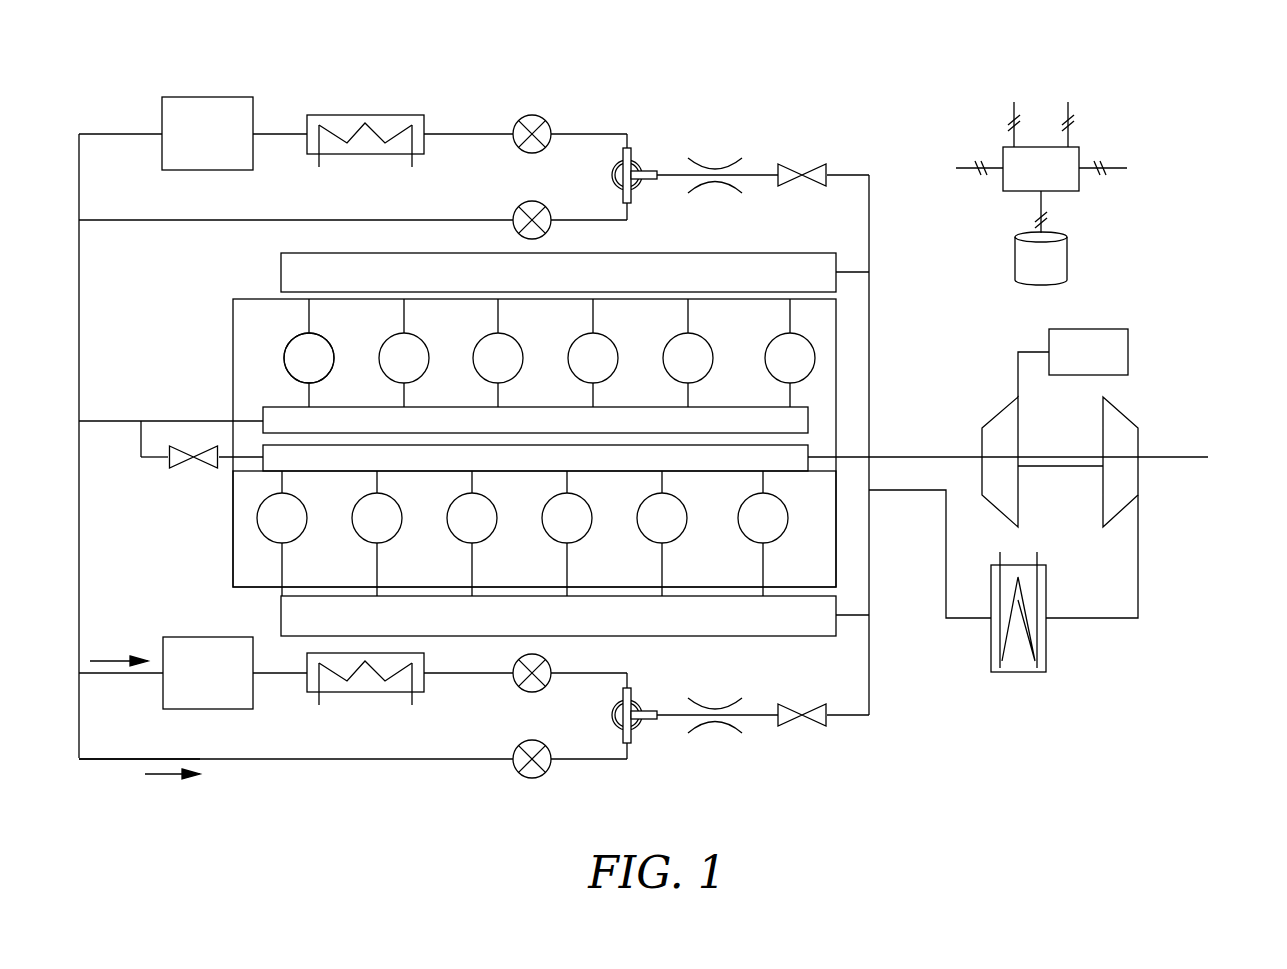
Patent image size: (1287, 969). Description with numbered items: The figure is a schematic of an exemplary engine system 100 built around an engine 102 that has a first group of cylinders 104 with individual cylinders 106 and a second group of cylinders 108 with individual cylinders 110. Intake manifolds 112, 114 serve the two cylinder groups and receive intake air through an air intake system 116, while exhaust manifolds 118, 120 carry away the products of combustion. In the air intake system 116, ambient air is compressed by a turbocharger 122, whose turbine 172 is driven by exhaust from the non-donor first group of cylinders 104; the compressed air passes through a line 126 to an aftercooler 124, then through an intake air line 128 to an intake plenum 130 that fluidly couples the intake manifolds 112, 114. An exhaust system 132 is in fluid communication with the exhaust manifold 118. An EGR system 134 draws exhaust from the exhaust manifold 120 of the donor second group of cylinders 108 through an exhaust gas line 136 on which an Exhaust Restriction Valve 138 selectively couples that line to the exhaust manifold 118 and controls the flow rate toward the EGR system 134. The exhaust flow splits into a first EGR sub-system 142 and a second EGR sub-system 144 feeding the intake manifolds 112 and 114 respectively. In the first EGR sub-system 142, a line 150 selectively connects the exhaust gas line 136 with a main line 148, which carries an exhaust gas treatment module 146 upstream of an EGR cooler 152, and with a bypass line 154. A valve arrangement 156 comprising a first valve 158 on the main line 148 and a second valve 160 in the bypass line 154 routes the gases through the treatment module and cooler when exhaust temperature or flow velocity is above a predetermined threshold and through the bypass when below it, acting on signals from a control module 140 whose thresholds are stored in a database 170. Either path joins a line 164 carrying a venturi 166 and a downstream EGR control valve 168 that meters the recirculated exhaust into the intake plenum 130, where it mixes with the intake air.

The engine system 100 is at (1215, 145).
The engine 102 is at (198, 300).
The first group of cylinders 104 is at (250, 554).
The individual cylinders 106 is at (365, 525).
The second group of cylinders 108 is at (278, 342).
The individual cylinders 110 is at (312, 368).
The intake manifold 112 is at (812, 627).
The intake manifold 114 is at (836, 255).
The air intake system 116 is at (1025, 770).
The exhaust manifold 118 is at (792, 460).
The exhaust manifold 120 is at (792, 423).
The turbocharger 122 is at (1150, 408).
The aftercooler 124 is at (1018, 672).
The line 126 is at (1110, 620).
The intake air line 128 is at (968, 620).
The intake plenum 130 is at (870, 298).
The exhaust system 132 is at (1073, 363).
The EGR system 134 is at (121, 112).
The exhaust gas line 136 is at (102, 424).
The Exhaust Restriction Valve 138 is at (172, 468).
The control module 140 is at (1041, 169).
The first EGR sub-system 142 is at (108, 782).
The second EGR sub-system 144 is at (441, 110).
The exhaust gas treatment module 146 is at (208, 673).
The main line 148 is at (117, 676).
The line 150 is at (79, 538).
The EGR cooler 152 is at (348, 692).
The bypass line 154 is at (363, 759).
The valve arrangement 156 is at (527, 797).
The first valve 158 is at (546, 660).
The second valve 160 is at (546, 773).
The line 164 is at (673, 716).
The venturi 166 is at (725, 727).
The EGR control valve 168 is at (818, 727).
The database 170 is at (1041, 238).
The turbine 172 is at (988, 422).